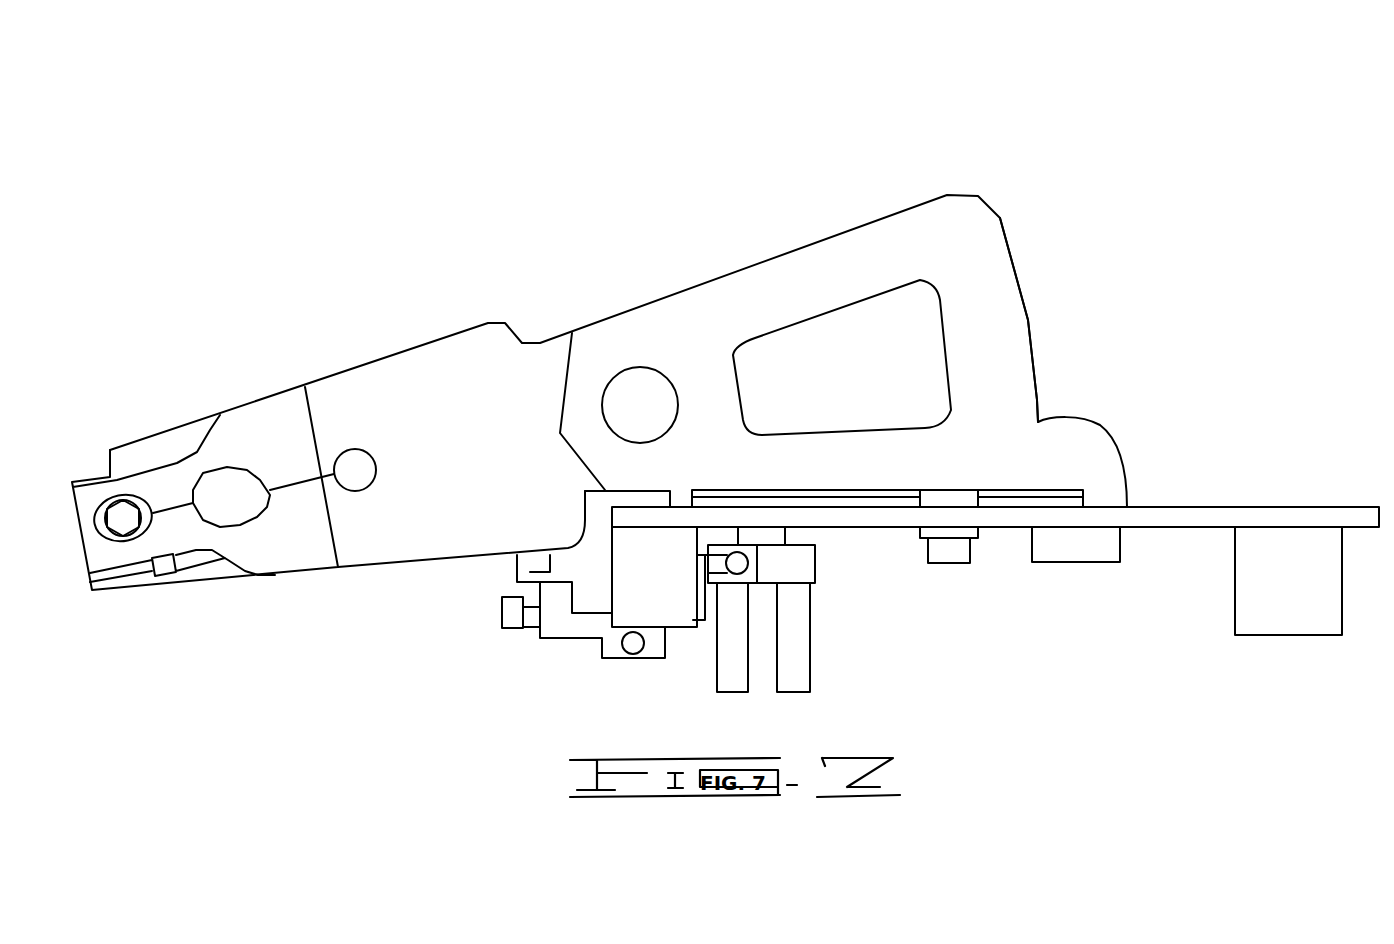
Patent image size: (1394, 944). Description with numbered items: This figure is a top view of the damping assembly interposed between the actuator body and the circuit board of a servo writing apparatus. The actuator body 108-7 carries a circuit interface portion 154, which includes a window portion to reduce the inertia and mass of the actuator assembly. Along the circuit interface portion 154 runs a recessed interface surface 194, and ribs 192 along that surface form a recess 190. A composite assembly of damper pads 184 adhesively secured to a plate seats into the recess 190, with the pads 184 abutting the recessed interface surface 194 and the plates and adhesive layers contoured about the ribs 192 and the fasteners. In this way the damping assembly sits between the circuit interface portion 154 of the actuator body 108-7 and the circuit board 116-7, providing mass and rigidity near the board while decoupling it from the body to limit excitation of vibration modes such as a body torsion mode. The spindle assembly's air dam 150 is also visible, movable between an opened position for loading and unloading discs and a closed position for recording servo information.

The actuator body 108-7 is at (820, 250).
The recessed interface surface 194 is at (730, 488).
The circuit interface portion 154 is at (1050, 440).
The circuit board 116-7 is at (1207, 518).
The ribs 192 is at (668, 500).
The damper pads 184 is at (826, 488).
The recess 190 is at (1085, 487).
The air dam 150 is at (962, 553).